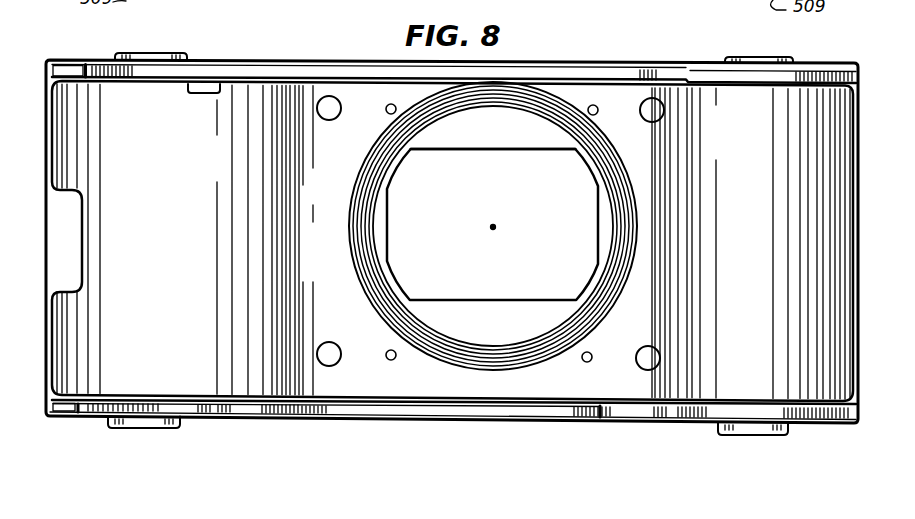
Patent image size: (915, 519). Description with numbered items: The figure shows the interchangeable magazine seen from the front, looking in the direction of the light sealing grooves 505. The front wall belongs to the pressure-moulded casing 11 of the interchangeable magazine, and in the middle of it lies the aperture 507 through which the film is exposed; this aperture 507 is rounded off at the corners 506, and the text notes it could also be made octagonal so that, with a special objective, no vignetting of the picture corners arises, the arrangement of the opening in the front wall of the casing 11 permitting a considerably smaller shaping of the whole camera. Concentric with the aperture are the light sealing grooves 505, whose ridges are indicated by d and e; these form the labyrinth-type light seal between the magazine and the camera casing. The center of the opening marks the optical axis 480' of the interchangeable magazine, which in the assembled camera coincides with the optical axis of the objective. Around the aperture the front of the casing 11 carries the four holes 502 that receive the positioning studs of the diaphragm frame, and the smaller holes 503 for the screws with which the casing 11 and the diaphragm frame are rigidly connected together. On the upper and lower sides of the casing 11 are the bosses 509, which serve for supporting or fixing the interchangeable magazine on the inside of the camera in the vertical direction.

The casing of the interchangeable magazine 11 is at (840, 210).
The optical axis of the interchangeable magazine 480' is at (499, 237).
The holes for the positioning studs 502 is at (318, 109).
The holes for the screws 503 is at (387, 113).
The light sealing grooves 505 is at (368, 252).
The rounded corners of the aperture 506 is at (395, 167).
The aperture of the interchangeable magazine 507 is at (502, 150).
The tabs 509 is at (118, 55).
The ridge of the light sealing grooves d is at (358, 200).
The ridge of the light sealing grooves e is at (372, 228).